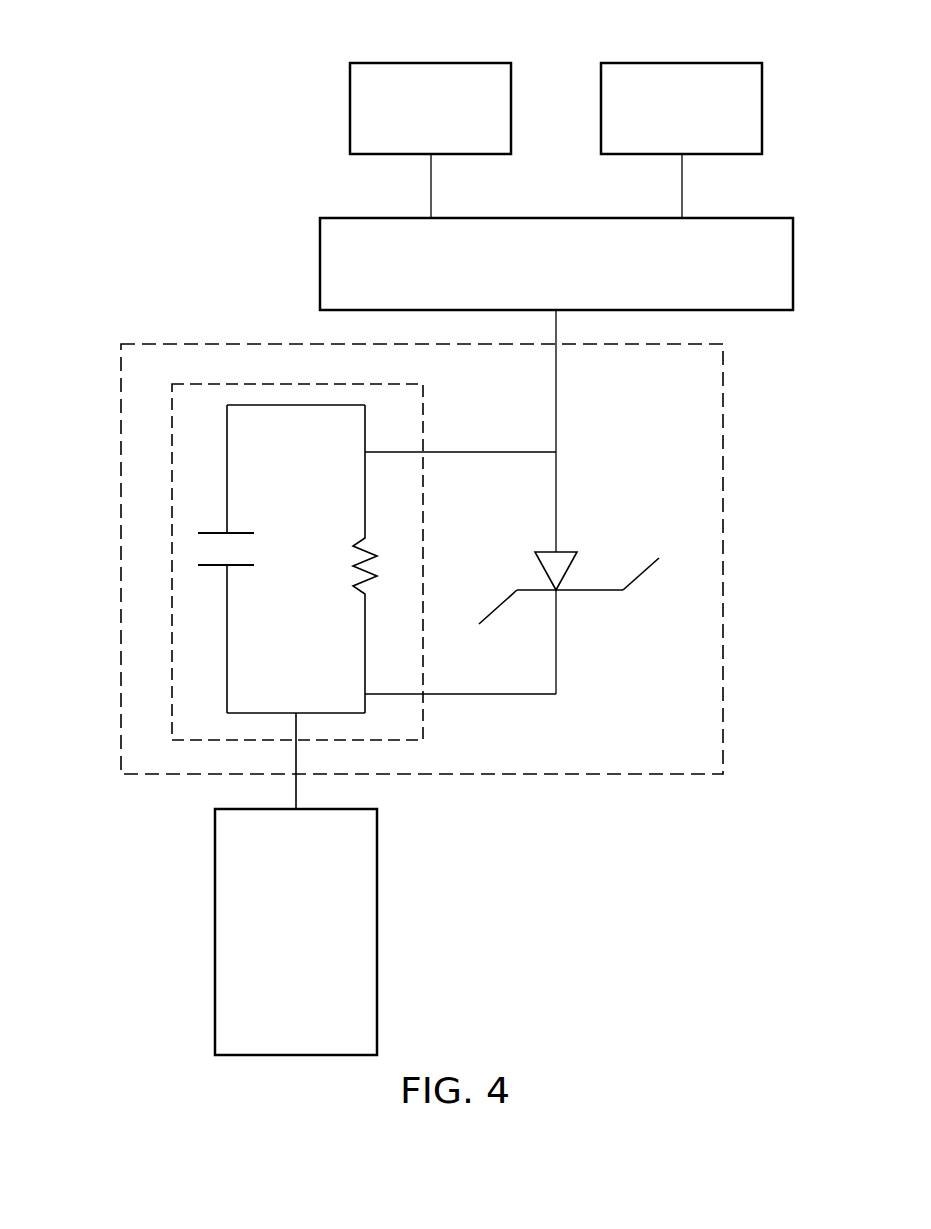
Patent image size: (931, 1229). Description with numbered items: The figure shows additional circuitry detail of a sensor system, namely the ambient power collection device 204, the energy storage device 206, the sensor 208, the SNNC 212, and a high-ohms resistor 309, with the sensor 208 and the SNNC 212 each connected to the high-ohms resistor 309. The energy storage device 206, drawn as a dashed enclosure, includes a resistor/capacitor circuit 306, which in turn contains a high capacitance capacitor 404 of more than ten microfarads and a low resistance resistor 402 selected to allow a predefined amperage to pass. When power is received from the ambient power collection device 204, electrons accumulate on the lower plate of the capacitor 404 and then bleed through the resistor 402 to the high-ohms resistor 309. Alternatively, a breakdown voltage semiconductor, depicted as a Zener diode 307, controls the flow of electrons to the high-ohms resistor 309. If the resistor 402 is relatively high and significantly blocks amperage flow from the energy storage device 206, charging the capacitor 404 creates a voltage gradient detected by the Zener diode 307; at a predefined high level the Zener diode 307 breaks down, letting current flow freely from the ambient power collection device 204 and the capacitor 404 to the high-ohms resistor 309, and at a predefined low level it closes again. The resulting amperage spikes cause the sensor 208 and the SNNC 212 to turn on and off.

The ambient power collection device 204 is at (377, 960).
The energy storage device 206 is at (121, 395).
The sensor 208 is at (420, 63).
The SNNC 212 is at (669, 63).
The resistor/capacitor (R/C) circuit 306 is at (172, 497).
The Zener diode 307 is at (572, 620).
The high-ohms resistor 309 is at (320, 268).
The resistor 402 is at (311, 590).
The capacitor 404 is at (264, 502).